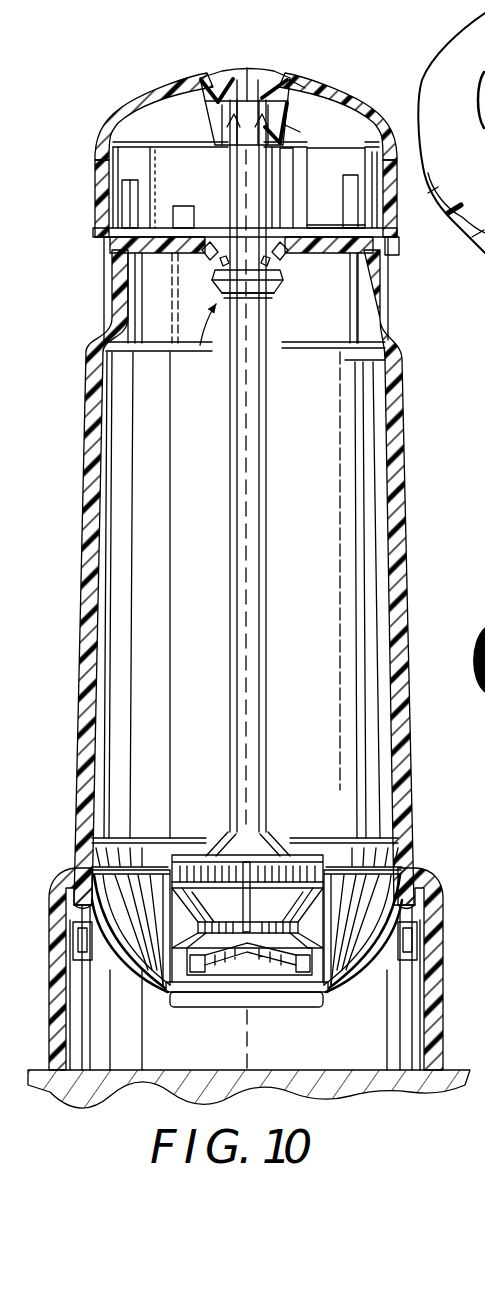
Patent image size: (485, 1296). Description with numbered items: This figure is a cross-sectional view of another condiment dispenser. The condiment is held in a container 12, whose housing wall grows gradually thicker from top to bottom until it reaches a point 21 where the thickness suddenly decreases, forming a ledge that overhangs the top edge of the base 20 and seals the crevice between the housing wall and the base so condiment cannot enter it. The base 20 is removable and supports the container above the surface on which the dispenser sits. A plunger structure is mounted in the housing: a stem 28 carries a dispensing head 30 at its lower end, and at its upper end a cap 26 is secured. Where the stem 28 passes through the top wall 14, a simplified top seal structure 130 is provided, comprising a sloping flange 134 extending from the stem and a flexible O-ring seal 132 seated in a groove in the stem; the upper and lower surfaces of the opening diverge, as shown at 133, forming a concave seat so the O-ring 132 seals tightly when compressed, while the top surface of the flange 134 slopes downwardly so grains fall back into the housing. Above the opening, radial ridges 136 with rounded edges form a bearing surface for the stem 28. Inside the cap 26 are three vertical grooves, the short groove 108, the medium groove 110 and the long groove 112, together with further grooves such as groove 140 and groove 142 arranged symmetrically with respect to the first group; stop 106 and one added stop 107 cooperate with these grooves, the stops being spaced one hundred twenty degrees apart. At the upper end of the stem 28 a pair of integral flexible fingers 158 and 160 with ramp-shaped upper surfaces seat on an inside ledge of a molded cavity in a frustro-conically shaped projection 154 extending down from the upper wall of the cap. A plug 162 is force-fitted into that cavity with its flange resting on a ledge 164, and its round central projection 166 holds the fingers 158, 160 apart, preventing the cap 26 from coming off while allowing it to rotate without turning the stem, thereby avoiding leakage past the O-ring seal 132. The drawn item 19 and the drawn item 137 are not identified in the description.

The container 12 is at (406, 735).
The top wall 14 is at (100, 247).
The collar 19 is at (113, 276).
The base 20 is at (438, 897).
The point 21 is at (392, 850).
The cap 26 is at (393, 130).
The stem 28 is at (258, 556).
The dispensing head 30 is at (283, 836).
The stop 106 is at (384, 303).
The stop 107 is at (171, 358).
The groove 108 is at (394, 238).
The groove 110 is at (352, 175).
The groove 112 is at (325, 128).
The top seal structure 130 is at (205, 353).
The O-ring seal 132 is at (267, 290).
The diverging surfaces 133 is at (227, 230).
The sloping flange 134 is at (272, 313).
The radial ridges 136 is at (285, 310).
The box bottom 137 is at (327, 227).
The groove 140 is at (181, 205).
The groove 142 is at (131, 180).
The frustro-conically shaped projection 154 is at (336, 99).
The flexible finger 158 is at (205, 88).
The flexible finger 160 is at (296, 85).
The plug 162 is at (222, 75).
The ledge 164 is at (221, 90).
The central projection 166 is at (262, 80).